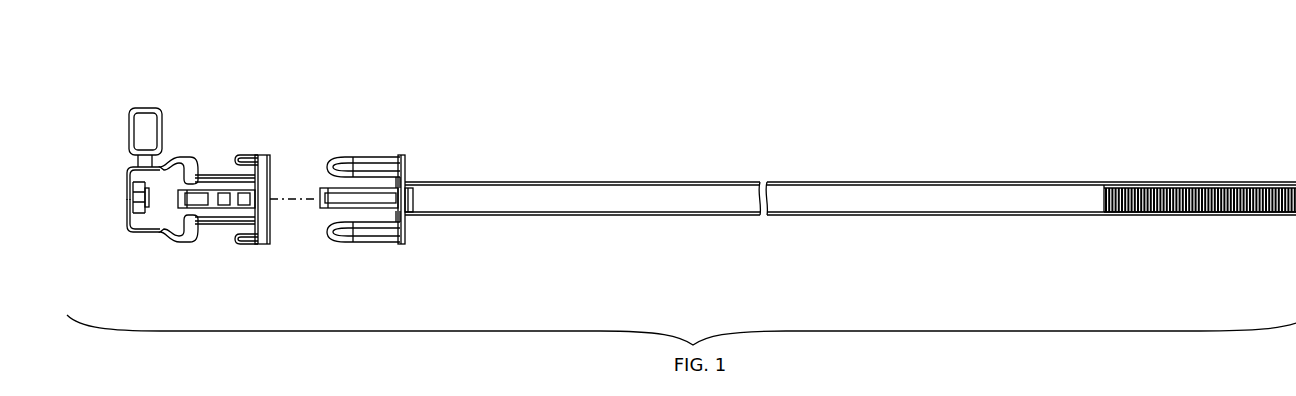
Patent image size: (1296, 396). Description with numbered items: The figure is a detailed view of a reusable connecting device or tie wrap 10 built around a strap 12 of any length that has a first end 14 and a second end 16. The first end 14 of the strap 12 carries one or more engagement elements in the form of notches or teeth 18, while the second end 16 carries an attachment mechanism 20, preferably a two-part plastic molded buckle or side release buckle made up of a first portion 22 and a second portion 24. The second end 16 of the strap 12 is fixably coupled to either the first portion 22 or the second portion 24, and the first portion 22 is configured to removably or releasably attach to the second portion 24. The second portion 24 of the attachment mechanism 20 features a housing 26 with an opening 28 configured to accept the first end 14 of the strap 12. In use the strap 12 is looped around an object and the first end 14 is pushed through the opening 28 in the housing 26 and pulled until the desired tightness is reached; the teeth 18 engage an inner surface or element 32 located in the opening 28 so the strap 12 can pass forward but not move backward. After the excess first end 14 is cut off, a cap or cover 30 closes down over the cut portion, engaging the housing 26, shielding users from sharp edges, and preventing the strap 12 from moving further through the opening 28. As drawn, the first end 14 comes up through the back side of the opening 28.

The tie wrap 10 is at (1117, 80).
The strap 12 is at (515, 183).
The first end 14 is at (1221, 246).
The second end 16 is at (520, 244).
The teeth 18 is at (1244, 183).
The attachment mechanism 20 is at (407, 150).
The first portion 22 is at (366, 235).
The second portion 24 is at (182, 232).
The housing 26 is at (160, 235).
The opening 28 is at (137, 215).
The cover 30 is at (145, 108).
The inner surface 32 is at (138, 193).